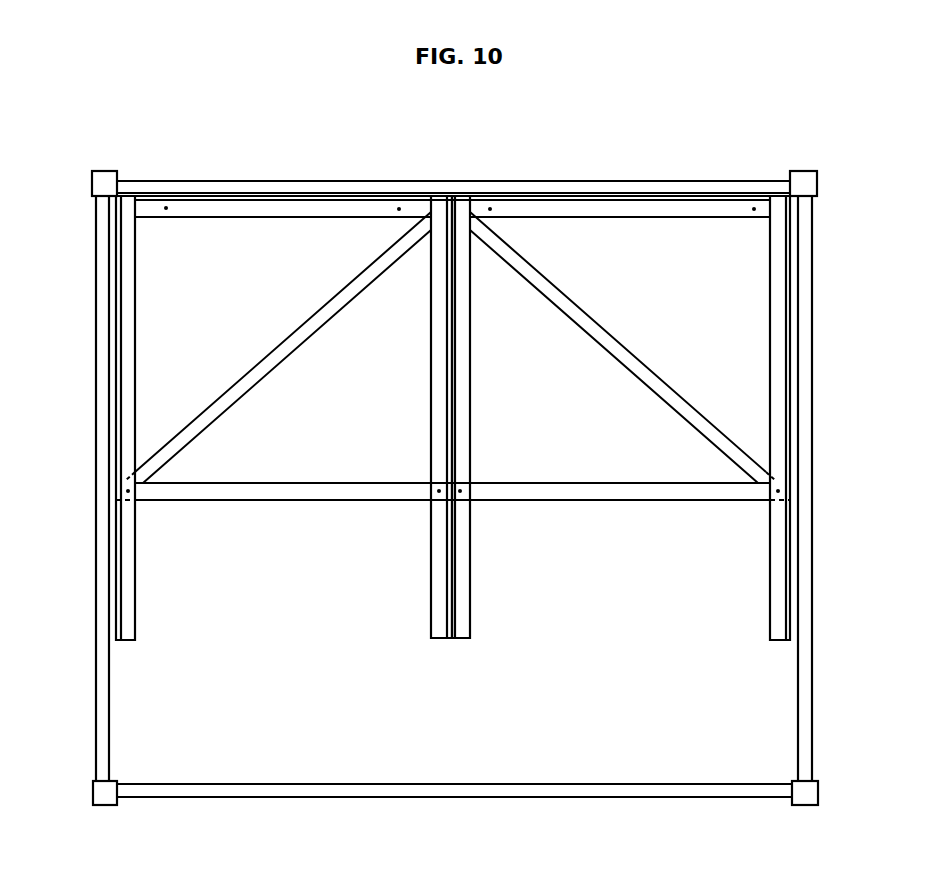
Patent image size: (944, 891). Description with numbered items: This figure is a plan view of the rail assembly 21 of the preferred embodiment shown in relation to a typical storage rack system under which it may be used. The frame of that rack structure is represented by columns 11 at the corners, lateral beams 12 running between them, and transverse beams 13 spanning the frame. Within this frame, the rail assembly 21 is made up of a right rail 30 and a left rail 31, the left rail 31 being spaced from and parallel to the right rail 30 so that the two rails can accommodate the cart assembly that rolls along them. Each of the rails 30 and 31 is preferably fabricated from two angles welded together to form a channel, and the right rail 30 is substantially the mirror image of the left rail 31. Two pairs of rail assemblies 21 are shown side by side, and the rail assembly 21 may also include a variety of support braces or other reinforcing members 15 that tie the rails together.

The column 11 is at (112, 171).
The lateral beam 12 is at (98, 677).
The transverse beam 13 is at (483, 185).
The reinforcing member 15 is at (280, 212).
The rail assembly 21 is at (767, 653).
The right rail 30 is at (430, 406).
The left rail 31 is at (130, 293).